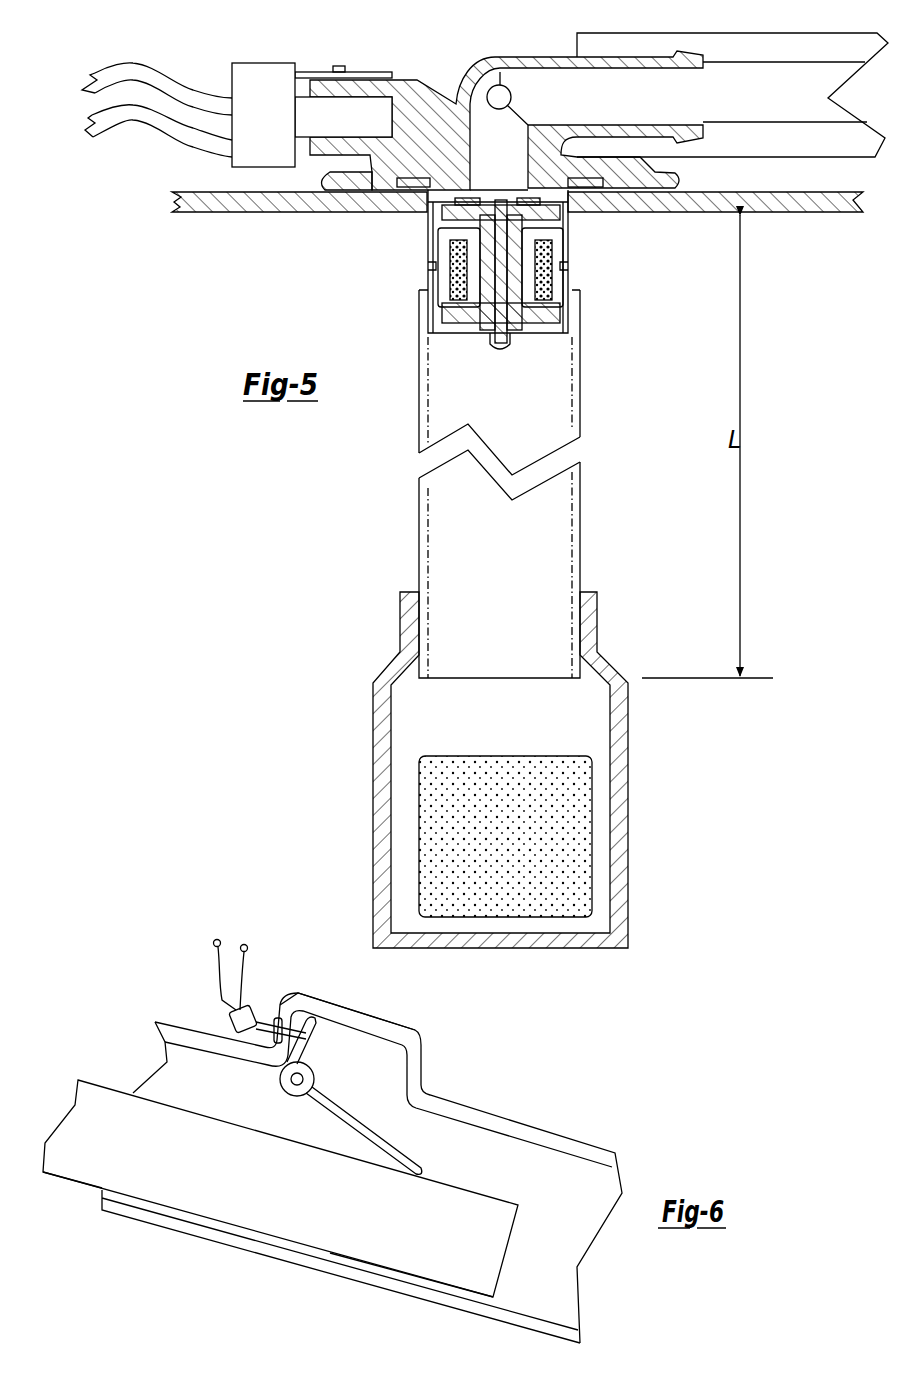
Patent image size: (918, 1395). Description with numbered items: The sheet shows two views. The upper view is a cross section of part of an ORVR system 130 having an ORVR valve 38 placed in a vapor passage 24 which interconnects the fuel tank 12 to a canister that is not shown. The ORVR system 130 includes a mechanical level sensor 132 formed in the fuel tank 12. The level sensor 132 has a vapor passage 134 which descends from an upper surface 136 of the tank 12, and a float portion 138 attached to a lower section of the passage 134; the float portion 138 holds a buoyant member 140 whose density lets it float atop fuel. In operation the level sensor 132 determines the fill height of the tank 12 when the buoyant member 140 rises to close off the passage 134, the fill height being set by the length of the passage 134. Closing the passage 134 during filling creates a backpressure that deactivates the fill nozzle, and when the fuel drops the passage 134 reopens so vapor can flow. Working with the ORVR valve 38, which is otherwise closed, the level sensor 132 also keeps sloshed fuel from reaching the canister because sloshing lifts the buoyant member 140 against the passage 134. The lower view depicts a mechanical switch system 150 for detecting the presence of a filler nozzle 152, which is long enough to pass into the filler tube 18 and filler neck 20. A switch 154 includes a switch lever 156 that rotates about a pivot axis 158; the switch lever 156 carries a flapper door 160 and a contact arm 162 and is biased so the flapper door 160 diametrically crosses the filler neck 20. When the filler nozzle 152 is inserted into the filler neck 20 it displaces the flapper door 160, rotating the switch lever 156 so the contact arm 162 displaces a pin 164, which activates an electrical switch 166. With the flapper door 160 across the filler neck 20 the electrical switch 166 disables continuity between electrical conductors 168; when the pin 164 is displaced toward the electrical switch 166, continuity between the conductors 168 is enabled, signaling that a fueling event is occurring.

In FIG. 5, the fuel tank 12 is at (290, 212).
In FIG. 6, the filler tube 18 is at (160, 1223).
In FIG. 6, the filler neck 20 is at (397, 1288).
In FIG. 5, the vapor passage 24 is at (639, 109).
In FIG. 5, the ORVR valve 38 is at (409, 57).
In FIG. 5, the ORVR system 130 is at (147, 320).
In FIG. 5, the mechanical level sensor 132 is at (266, 504).
In FIG. 5, the vapor passage 134 is at (583, 352).
In FIG. 5, the upper surface 136 is at (343, 212).
In FIG. 5, the float portion 138 is at (385, 775).
In FIG. 5, the buoyant member 140 is at (570, 802).
In FIG. 6, the mechanical switch system 150 is at (535, 1112).
In FIG. 6, the filler nozzle 152 is at (105, 1155).
In FIG. 6, the switch 154 is at (329, 987).
In FIG. 6, the switch lever 156 is at (336, 1078).
In FIG. 6, the pivot axis 158 is at (280, 1079).
In FIG. 6, the flapper door 160 is at (350, 1152).
In FIG. 6, the contact arm 162 is at (318, 1042).
In FIG. 6, the pin 164 is at (311, 1026).
In FIG. 6, the electrical switch 166 is at (234, 1036).
In FIG. 6, the electrical conductors 168 is at (212, 959).